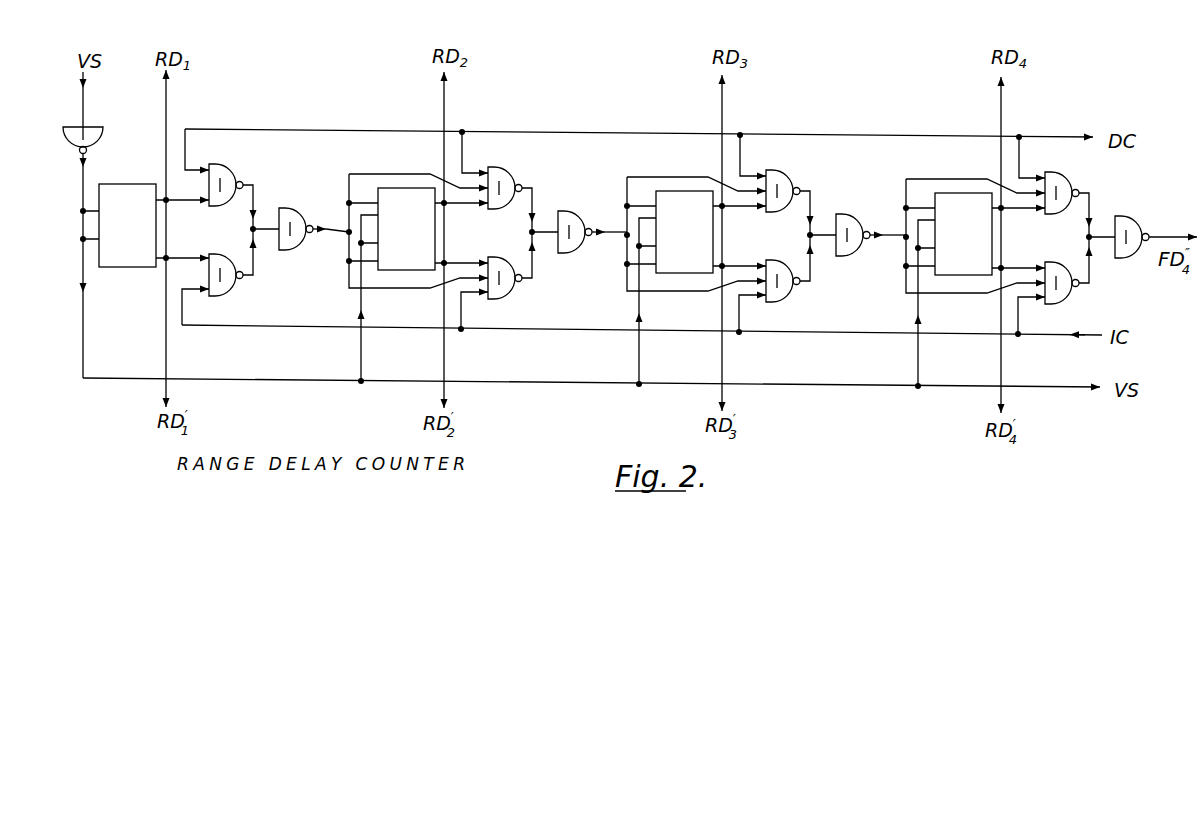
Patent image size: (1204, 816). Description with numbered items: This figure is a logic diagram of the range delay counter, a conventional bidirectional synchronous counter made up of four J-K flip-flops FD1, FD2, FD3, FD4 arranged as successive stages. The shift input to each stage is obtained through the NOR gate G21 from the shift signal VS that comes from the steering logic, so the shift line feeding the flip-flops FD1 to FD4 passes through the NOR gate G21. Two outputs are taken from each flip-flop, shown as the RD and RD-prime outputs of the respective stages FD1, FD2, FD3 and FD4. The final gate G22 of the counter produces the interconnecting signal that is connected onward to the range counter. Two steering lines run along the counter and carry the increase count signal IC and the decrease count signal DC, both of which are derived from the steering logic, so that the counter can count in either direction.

The NOR gate G21 is at (95, 125).
The final gate G22 is at (1077, 190).
The J-K flip-flop FD1 is at (127, 225).
The J-K flip-flop FD2 is at (406, 229).
The J-K flip-flop FD3 is at (684, 232).
The J-K flip-flop FD4 is at (963, 234).